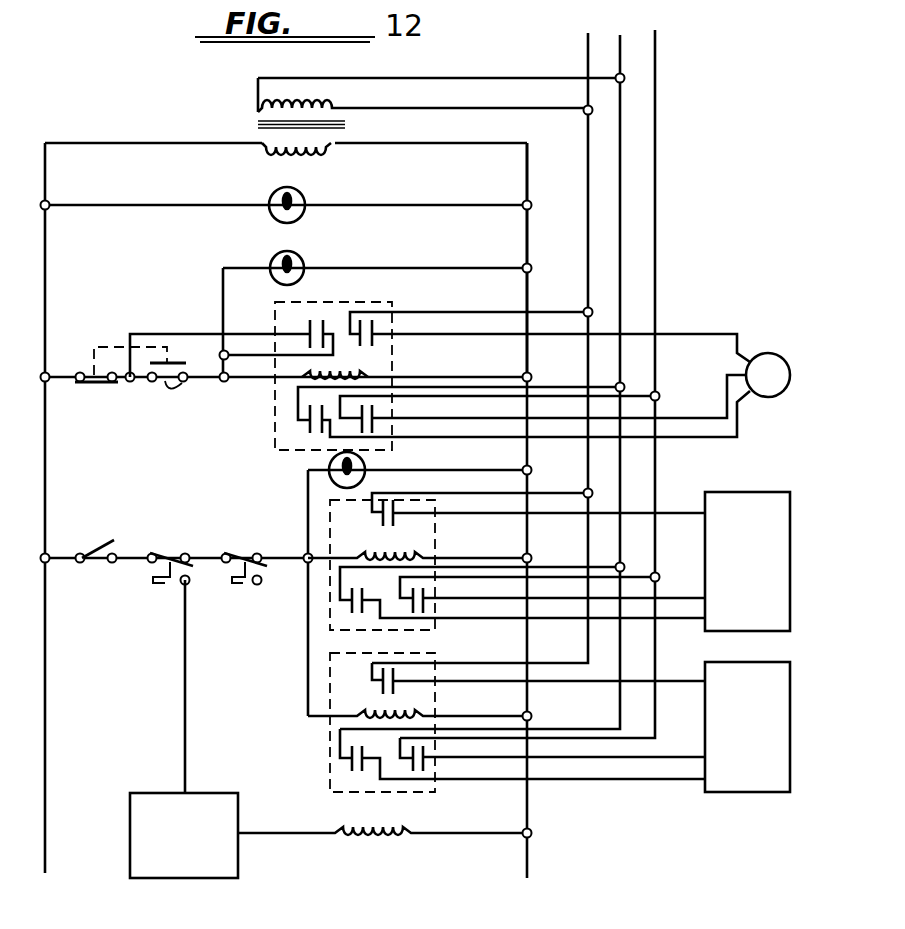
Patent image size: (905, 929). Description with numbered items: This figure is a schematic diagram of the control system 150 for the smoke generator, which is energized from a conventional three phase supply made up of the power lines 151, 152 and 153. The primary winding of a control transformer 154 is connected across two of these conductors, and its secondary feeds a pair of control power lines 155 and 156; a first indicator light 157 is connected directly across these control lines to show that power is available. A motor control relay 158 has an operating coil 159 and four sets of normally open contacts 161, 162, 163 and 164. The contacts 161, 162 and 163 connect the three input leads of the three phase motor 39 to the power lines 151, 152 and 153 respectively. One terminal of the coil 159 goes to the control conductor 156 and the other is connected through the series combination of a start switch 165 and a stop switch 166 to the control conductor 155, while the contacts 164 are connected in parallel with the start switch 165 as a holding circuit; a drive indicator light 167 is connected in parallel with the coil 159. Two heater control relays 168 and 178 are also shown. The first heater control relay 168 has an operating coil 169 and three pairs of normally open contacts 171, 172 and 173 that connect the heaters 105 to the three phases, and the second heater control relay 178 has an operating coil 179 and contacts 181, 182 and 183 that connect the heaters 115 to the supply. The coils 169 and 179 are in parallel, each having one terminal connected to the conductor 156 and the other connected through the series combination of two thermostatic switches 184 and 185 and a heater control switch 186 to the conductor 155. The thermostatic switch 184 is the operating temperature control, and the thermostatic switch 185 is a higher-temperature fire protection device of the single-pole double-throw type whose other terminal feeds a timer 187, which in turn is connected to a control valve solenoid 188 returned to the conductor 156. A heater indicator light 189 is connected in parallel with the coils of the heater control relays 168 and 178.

The control system 150 is at (134, 118).
The power line 151 is at (586, 55).
The power line 152 is at (621, 40).
The power line 153 is at (656, 82).
The control transformer 154 is at (348, 127).
The control power line 155 is at (45, 174).
The control power line 156 is at (527, 172).
The first indicator light 157 is at (300, 197).
The motor control relay 158 is at (390, 302).
The operating coil 159 is at (362, 370).
The normally open contacts 161 is at (374, 327).
The normally open contacts 162 is at (305, 427).
The normally open contacts 163 is at (374, 425).
The normally open contacts 164 is at (315, 318).
The start switch 165 is at (190, 381).
The stop switch 166 is at (92, 374).
The drive indicator light 167 is at (301, 260).
The first heater control relay 168 is at (436, 540).
The operating coil 169 is at (362, 556).
The normally open contacts 171 is at (395, 509).
The normally open contacts 172 is at (355, 614).
The normally open contacts 173 is at (425, 606).
The heater control relay 178 is at (436, 710).
The operating coil 179 is at (362, 718).
The normally open contacts 181 is at (395, 678).
The normally open contacts 182 is at (355, 768).
The normally open contacts 183 is at (425, 768).
The thermostatic switch 184 is at (240, 553).
The thermostatic switch 185 is at (168, 553).
The heater control switch 186 is at (92, 566).
The timer 187 is at (200, 792).
The control valve solenoid 188 is at (398, 826).
The heater indicator light 189 is at (366, 468).
The three phase motor 39 is at (775, 358).
The heaters 105 is at (747, 561).
The heaters 115 is at (747, 727).